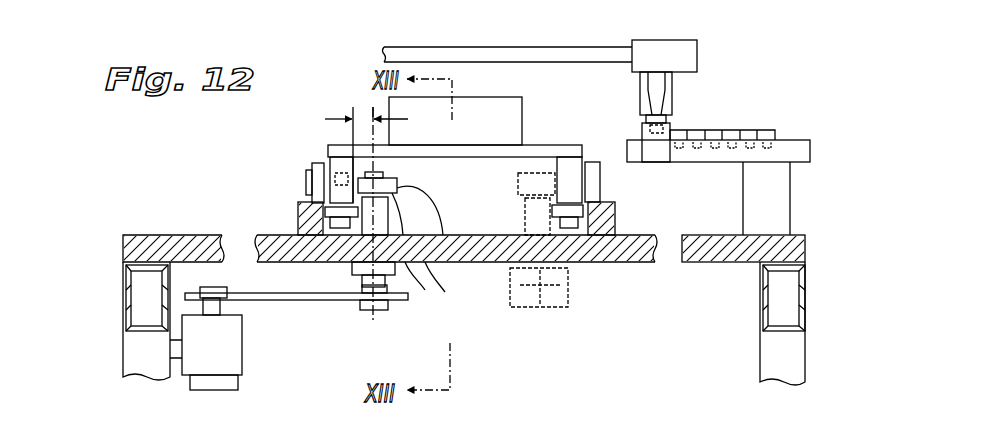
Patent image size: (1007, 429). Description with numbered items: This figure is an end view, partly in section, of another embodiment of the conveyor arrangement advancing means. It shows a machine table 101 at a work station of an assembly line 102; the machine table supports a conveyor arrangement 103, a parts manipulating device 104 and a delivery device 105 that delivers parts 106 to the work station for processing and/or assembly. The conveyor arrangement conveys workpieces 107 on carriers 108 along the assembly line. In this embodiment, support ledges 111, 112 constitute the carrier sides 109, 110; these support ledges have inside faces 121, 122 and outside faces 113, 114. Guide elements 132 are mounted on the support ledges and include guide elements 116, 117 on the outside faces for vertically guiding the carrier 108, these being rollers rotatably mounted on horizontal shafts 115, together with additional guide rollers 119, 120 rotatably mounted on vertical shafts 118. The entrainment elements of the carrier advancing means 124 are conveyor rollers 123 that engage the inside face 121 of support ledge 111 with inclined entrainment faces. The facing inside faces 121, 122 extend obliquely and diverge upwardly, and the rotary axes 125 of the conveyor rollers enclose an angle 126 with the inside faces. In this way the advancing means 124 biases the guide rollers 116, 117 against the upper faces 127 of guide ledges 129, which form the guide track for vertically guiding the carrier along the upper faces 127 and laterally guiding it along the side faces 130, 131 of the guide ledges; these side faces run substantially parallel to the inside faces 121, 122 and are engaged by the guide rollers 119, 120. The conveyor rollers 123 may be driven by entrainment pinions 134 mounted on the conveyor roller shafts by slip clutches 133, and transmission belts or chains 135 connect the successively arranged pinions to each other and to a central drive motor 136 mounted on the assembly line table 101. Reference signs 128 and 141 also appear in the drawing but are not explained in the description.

The machine table 101 is at (152, 360).
The assembly line 102 is at (163, 146).
The conveyor arrangement 103 is at (311, 101).
The parts manipulating device 104 is at (716, 34).
The delivery device 105 is at (787, 126).
The parts 106 is at (708, 128).
The workpiece 107 is at (505, 123).
The carrier 108 is at (542, 152).
The carrier side 109 is at (338, 111).
The carrier side 110 is at (575, 108).
The support ledge 111 is at (345, 166).
The support ledge 112 is at (590, 190).
The outside face 113 is at (313, 160).
The outside face 114 is at (594, 155).
The horizontal shaft 115 is at (330, 216).
The guide element 116 is at (304, 189).
The guide element 117 is at (605, 178).
The vertical shaft 118 is at (350, 232).
The roller 119 is at (340, 235).
The roller 120 is at (555, 225).
The inside face 121 is at (440, 240).
The inside face 122 is at (552, 175).
The conveyor roller 123 is at (397, 185).
The carrier advancing means 124 is at (395, 275).
The rotary axis 125 is at (342, 137).
The angle 126 is at (362, 107).
The upper face 127 is at (297, 222).
The slide 128 is at (300, 203).
The guide ledge 129 is at (300, 222).
The side face 130 is at (330, 237).
The side face 131 is at (600, 235).
The guide elements 132 is at (365, 230).
The slip clutch 133 is at (400, 310).
The entrainment pinion 134 is at (395, 310).
The transmission belt or chain 135 is at (385, 310).
The central drive motor 136 is at (228, 357).
The cam follower 141 is at (540, 290).